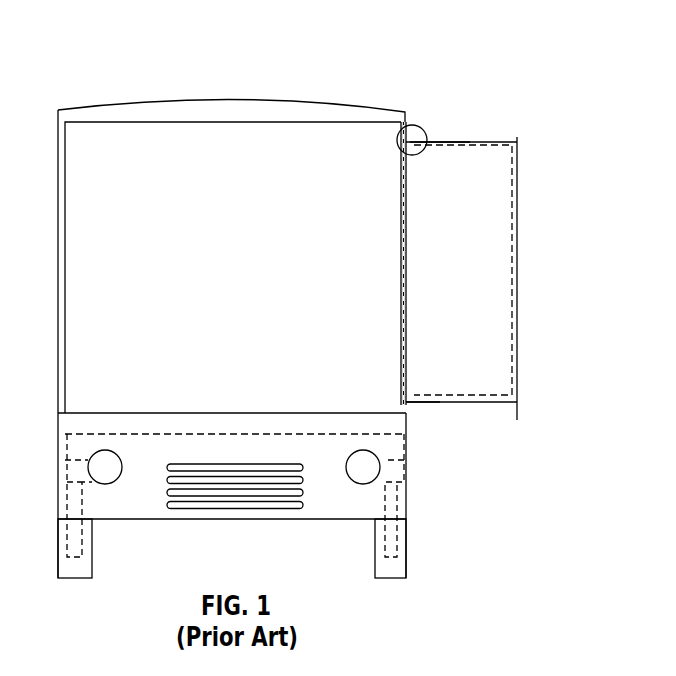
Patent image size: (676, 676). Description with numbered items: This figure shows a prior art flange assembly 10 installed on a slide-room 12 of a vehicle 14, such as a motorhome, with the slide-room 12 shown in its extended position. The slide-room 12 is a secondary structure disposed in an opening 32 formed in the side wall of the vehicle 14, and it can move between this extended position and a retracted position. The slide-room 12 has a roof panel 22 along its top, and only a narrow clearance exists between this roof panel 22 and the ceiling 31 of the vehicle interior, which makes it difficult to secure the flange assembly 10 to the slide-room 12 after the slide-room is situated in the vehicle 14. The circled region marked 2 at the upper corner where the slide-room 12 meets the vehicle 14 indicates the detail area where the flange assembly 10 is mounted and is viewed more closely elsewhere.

The flange assembly 10 is at (470, 61).
The slide-room 12 is at (516, 185).
The vehicle 14 is at (267, 100).
The roof panel 22 is at (478, 142).
The ceiling 31 is at (307, 124).
The opening 32 is at (410, 404).
The detail view indicator 2 is at (404, 136).